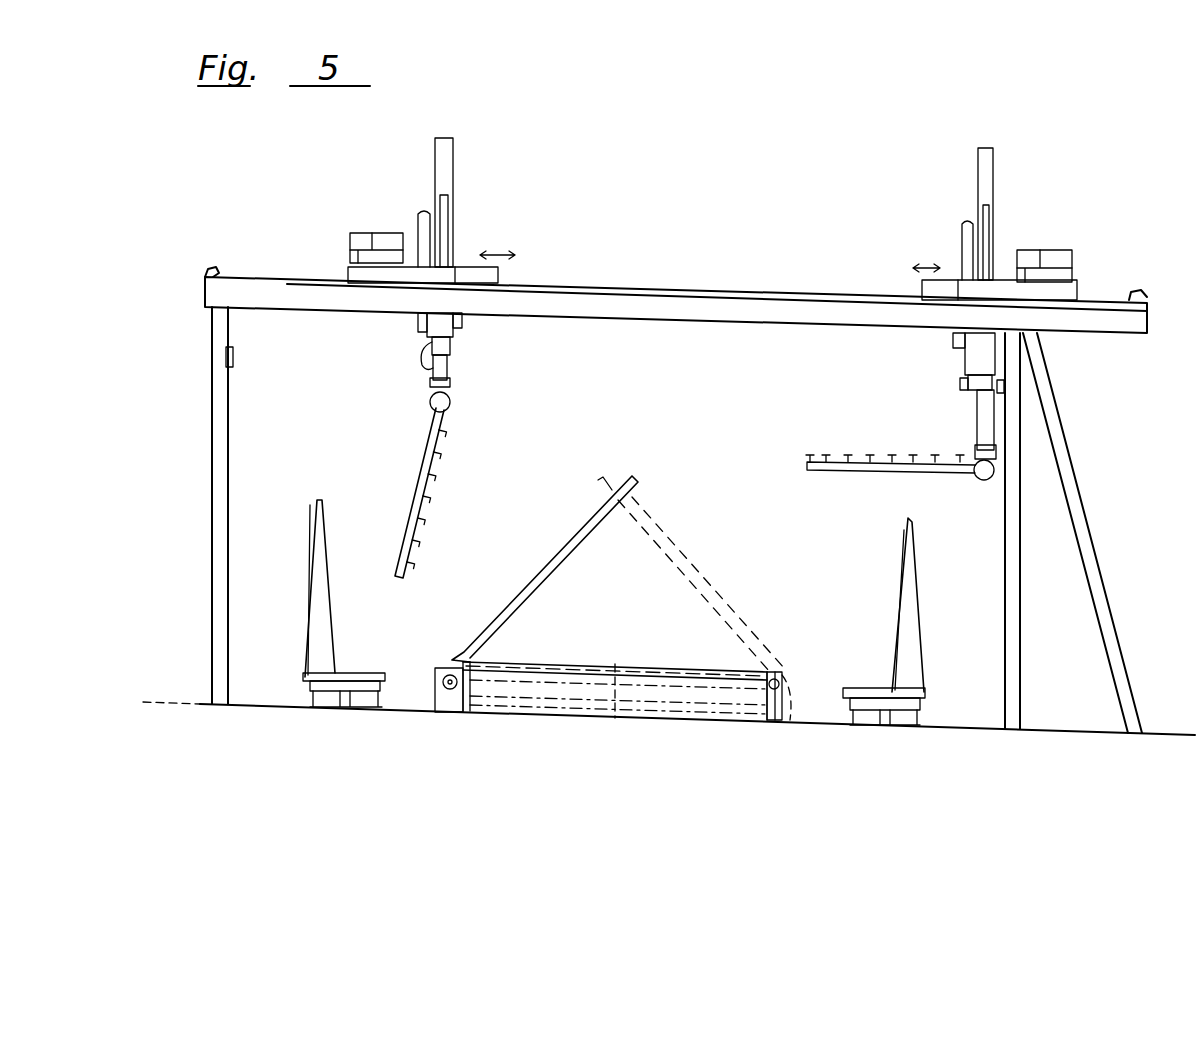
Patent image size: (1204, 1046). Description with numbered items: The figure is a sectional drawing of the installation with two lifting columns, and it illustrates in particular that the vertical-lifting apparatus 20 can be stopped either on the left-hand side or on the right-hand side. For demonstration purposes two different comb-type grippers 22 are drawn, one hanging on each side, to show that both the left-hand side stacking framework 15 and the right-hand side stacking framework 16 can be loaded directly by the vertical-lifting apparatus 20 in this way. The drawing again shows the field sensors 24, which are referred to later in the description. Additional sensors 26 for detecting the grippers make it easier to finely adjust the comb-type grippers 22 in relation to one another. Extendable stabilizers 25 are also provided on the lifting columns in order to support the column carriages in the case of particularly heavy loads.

The left-hand side stacking framework 15 is at (315, 552).
The right-hand side stacking framework 16 is at (917, 583).
The vertical-lifting apparatus 20 is at (568, 556).
The comb-type gripper 22 is at (420, 455).
The field sensor 24 is at (233, 353).
The extendable stabilizer 25 is at (922, 285).
The sensor for detecting the grippers 26 is at (950, 342).